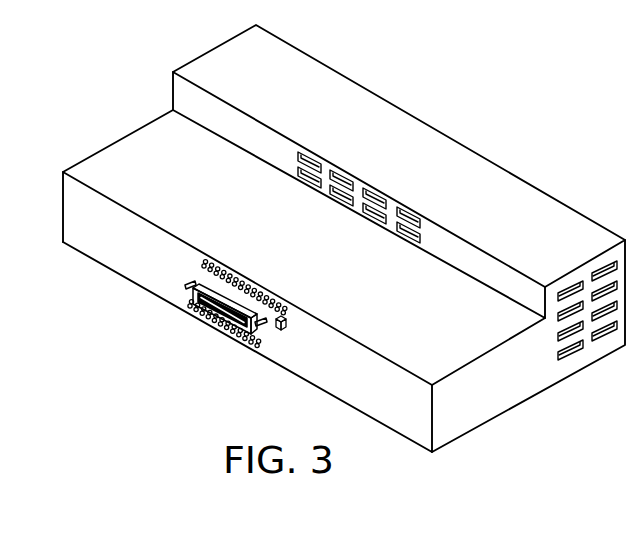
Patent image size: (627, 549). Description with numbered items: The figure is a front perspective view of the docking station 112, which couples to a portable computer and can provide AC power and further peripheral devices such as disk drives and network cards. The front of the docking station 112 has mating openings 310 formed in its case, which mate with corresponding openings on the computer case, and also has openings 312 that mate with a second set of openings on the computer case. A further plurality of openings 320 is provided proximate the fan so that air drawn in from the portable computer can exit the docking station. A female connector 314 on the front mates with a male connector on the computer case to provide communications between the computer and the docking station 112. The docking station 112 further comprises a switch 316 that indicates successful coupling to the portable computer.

The docking station 112 is at (469, 104).
The mating openings 310 is at (215, 327).
The openings 312 is at (228, 268).
The female connector 314 is at (230, 338).
The switch 316 is at (288, 323).
The openings 320 is at (298, 171).